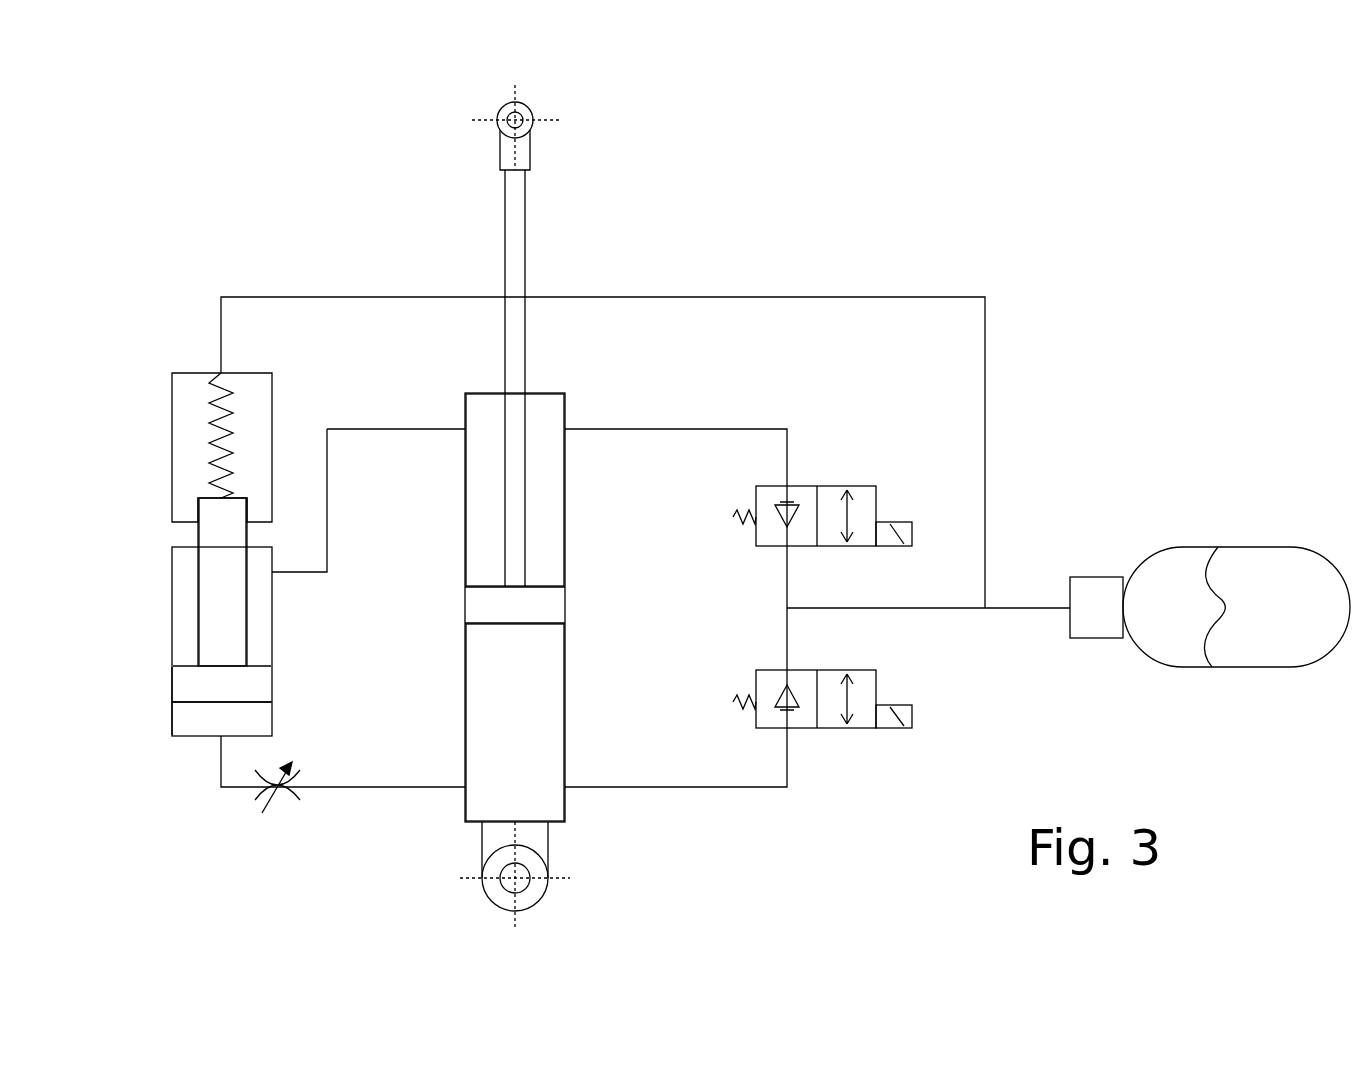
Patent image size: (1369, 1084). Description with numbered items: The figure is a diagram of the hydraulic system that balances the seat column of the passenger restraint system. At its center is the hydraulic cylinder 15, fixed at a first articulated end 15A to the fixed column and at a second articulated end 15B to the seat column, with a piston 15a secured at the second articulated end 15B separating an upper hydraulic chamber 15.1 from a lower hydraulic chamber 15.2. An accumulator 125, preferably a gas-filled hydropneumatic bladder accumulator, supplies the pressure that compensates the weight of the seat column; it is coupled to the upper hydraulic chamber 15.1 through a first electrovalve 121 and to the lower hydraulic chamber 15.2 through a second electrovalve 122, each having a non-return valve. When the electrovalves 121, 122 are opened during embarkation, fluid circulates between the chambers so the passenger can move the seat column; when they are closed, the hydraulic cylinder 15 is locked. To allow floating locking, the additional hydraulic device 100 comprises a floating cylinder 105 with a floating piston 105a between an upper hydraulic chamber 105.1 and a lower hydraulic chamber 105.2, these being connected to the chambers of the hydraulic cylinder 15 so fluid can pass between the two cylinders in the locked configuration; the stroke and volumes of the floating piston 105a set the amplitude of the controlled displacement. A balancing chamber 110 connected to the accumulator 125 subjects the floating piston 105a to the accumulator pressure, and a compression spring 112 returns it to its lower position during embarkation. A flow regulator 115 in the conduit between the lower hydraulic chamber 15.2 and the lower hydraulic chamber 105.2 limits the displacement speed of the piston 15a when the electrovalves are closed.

The hydraulic device 100 is at (143, 338).
The hydraulic cylinder 15 is at (565, 488).
The upper hydraulic chamber 15.1 is at (482, 477).
The lower hydraulic chamber 15.2 is at (495, 724).
The piston 15a is at (510, 556).
The first articulated end 15A is at (540, 893).
The second articulated end 15B is at (501, 113).
The floating cylinder 105 is at (174, 550).
The upper hydraulic chamber 105.1 is at (186, 613).
The floating piston 105a is at (232, 604).
The lower hydraulic chamber 105.2 is at (186, 715).
The balancing chamber 110 is at (185, 437).
The compression spring 112 is at (233, 437).
The flow regulator 115 is at (267, 793).
The first electrovalve 121 is at (810, 486).
The second electrovalve 122 is at (812, 730).
The accumulator 125 is at (1216, 548).